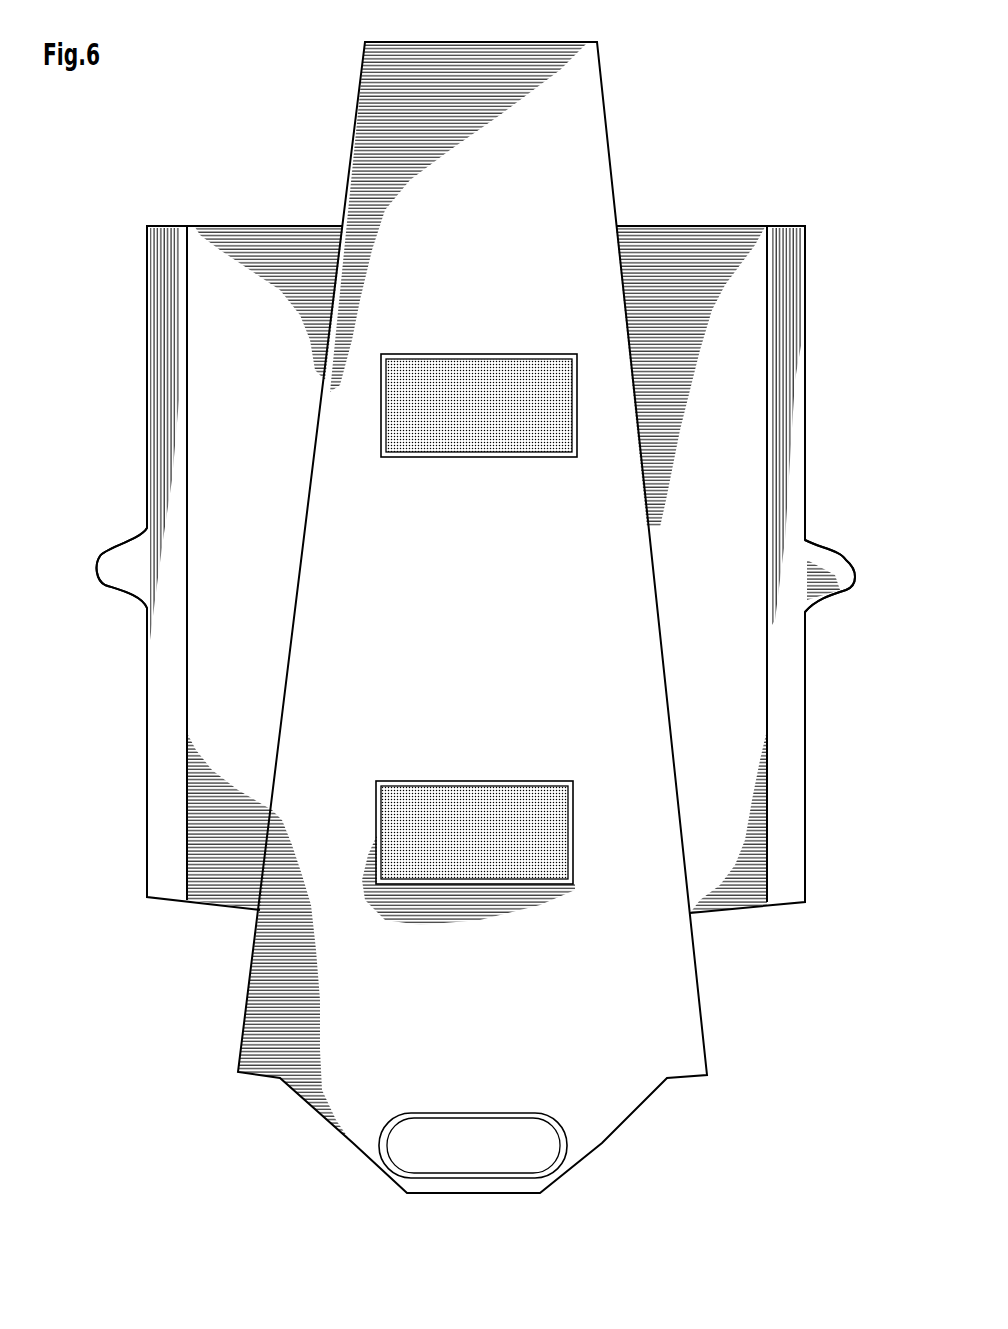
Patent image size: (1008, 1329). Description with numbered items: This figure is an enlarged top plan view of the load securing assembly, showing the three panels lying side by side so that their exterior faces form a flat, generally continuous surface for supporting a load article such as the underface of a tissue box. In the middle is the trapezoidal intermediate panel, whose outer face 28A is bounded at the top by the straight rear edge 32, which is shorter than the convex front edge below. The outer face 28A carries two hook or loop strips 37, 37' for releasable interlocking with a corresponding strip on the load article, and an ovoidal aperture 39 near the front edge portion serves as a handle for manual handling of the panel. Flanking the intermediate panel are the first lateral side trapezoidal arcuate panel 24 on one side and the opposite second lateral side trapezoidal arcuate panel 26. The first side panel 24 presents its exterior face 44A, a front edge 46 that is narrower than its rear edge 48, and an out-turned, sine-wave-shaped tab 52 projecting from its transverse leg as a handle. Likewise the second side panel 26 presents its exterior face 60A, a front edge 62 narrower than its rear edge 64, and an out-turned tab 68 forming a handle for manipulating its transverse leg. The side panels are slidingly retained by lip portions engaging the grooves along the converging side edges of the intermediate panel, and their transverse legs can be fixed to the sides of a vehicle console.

The first lateral side trapezoidal arcuate panel 24 is at (146, 446).
The second lateral side trapezoidal arcuate panel 26 is at (812, 450).
The outer face of panel body 28A is at (481, 576).
The straight rear edge 32 is at (478, 42).
The hook or loop strip 37 is at (479, 375).
The hook or loop strip 37' is at (474, 806).
The ovoidal aperture 39 is at (483, 1165).
The exterior face of side panel 44A is at (260, 592).
The front edge 46 is at (212, 905).
The rear edge 48 is at (262, 225).
The out-turned tab 52 is at (122, 572).
The exterior face of side panel 60A is at (737, 605).
The front edge 62 is at (727, 910).
The rear edge 64 is at (688, 225).
The out-turned tab 68 is at (836, 562).